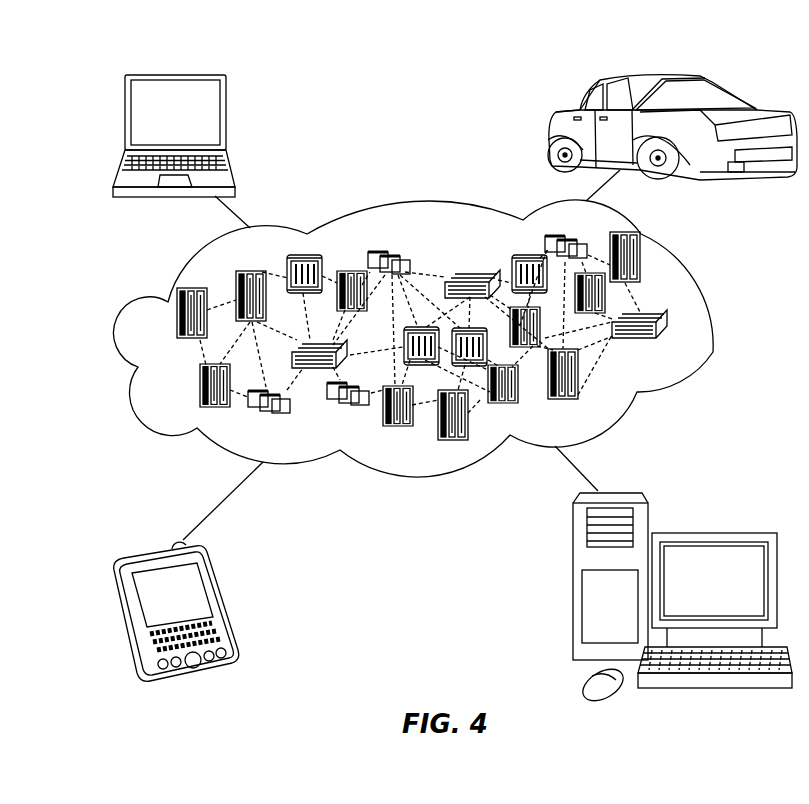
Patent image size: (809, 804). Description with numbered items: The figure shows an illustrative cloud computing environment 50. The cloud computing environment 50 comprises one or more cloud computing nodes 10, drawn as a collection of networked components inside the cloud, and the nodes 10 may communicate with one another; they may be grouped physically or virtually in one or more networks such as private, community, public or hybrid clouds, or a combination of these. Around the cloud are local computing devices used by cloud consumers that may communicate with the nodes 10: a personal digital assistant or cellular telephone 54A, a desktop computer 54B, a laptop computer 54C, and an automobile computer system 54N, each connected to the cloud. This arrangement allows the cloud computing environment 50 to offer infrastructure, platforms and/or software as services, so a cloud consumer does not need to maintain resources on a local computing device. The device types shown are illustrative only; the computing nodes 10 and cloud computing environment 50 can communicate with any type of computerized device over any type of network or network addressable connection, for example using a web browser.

The laptop computer 54C is at (227, 120).
The automobile computer system 54N is at (552, 132).
The personal digital assistant or cellular telephone 54A is at (219, 605).
The desktop computer 54B is at (712, 533).
The cloud computing environment 50 is at (713, 319).
The cloud computing node 10 is at (672, 344).